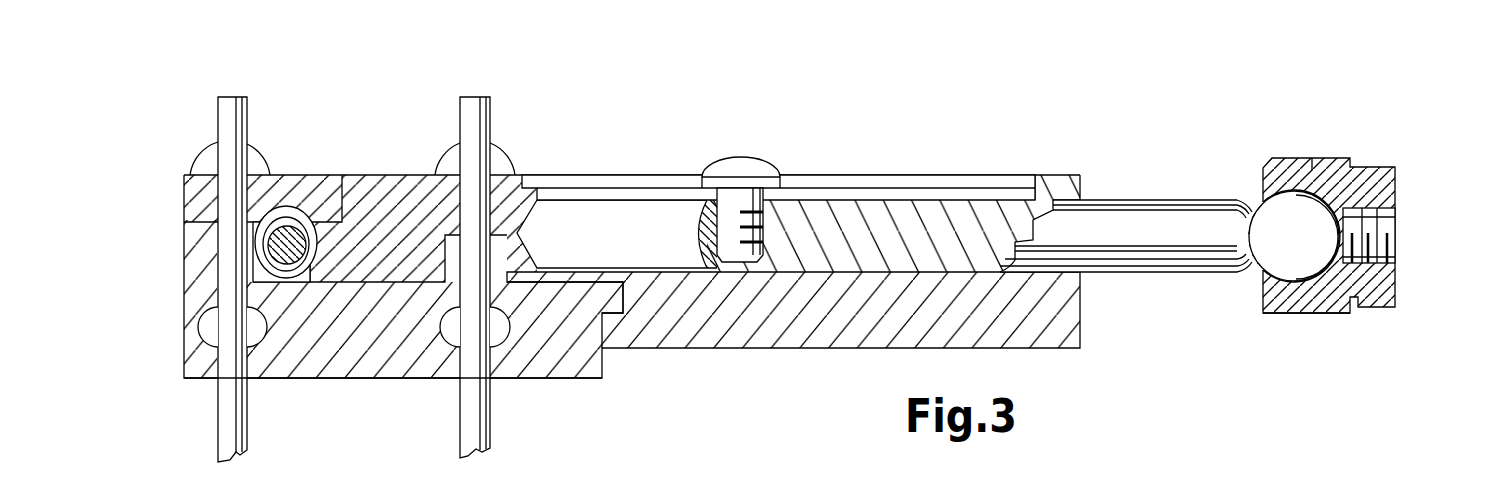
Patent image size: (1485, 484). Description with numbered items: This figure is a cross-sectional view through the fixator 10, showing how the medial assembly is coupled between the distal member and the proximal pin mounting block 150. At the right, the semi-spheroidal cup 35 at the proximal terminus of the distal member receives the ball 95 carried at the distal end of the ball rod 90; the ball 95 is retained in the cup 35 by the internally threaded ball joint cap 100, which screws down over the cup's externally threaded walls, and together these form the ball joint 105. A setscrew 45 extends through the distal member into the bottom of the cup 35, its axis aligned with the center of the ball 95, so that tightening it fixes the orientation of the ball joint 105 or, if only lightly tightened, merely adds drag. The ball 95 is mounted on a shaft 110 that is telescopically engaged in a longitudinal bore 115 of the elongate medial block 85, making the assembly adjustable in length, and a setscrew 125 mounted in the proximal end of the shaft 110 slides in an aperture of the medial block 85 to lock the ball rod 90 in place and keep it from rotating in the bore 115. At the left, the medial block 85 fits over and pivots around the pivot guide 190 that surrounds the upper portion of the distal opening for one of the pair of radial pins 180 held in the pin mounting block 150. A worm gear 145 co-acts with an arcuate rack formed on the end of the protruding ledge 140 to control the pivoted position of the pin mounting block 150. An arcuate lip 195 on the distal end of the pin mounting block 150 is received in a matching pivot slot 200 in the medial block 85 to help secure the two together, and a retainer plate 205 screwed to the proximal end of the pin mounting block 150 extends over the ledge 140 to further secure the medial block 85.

The fixator 10 is at (590, 130).
The semi-spheroidal cup 35 is at (1300, 193).
The setscrew 45 is at (1396, 240).
The medial block 85 is at (779, 349).
The ball rod 90 is at (1132, 198).
The ball 95 is at (1265, 202).
The ball joint cap 100 is at (1312, 313).
The ball joint 105 is at (1298, 158).
The shaft 110 is at (1125, 275).
The longitudinal bore 115 is at (660, 268).
The setscrew 125 is at (741, 157).
The protruding ledge 140 is at (297, 285).
The worm gear 145 is at (296, 206).
The proximal pin mounting block 150 is at (400, 378).
The radial pins 180 is at (217, 412).
The pivot guide 190 is at (443, 247).
The arcuate lip 195 is at (625, 308).
The pivot slot 200 is at (623, 307).
The retainer plate 205 is at (184, 204).